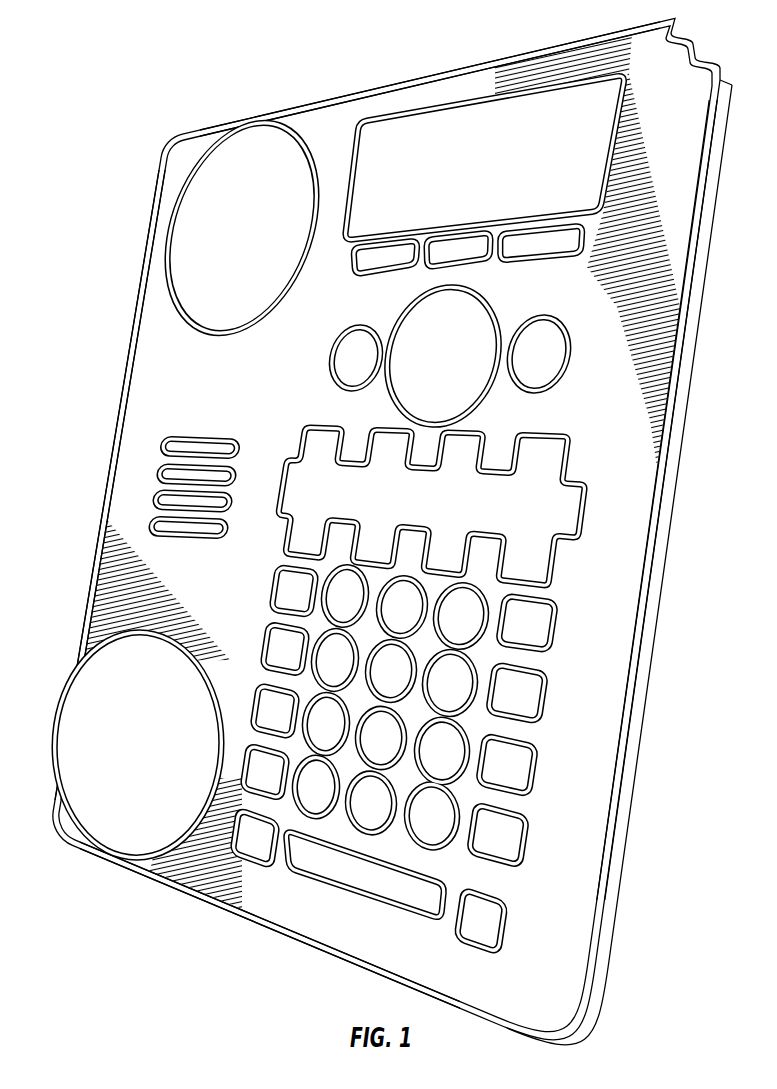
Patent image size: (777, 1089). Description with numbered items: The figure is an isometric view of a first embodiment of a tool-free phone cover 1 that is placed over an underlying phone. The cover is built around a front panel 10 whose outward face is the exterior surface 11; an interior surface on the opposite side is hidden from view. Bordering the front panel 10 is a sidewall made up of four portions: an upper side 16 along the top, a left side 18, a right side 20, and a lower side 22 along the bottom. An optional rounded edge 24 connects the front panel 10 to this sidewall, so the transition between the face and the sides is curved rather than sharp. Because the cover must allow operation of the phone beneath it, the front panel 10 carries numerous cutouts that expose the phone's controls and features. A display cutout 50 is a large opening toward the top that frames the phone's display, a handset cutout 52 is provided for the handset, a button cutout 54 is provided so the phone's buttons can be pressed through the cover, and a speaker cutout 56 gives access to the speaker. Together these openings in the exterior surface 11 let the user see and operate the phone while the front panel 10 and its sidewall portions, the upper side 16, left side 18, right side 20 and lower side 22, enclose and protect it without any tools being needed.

The tool-free phone cover 1 is at (127, 98).
The front panel 10 is at (115, 575).
The exterior surface 11 is at (229, 583).
The upper side 16 is at (383, 86).
The left side 18 is at (104, 512).
The right side 20 is at (653, 648).
The lower side 22 is at (310, 946).
The rounded edge 24 is at (658, 519).
The display cutout 50 is at (456, 181).
The handset cutout 52 is at (218, 250).
The button cutout 54 is at (380, 684).
The speaker cutout 56 is at (165, 500).